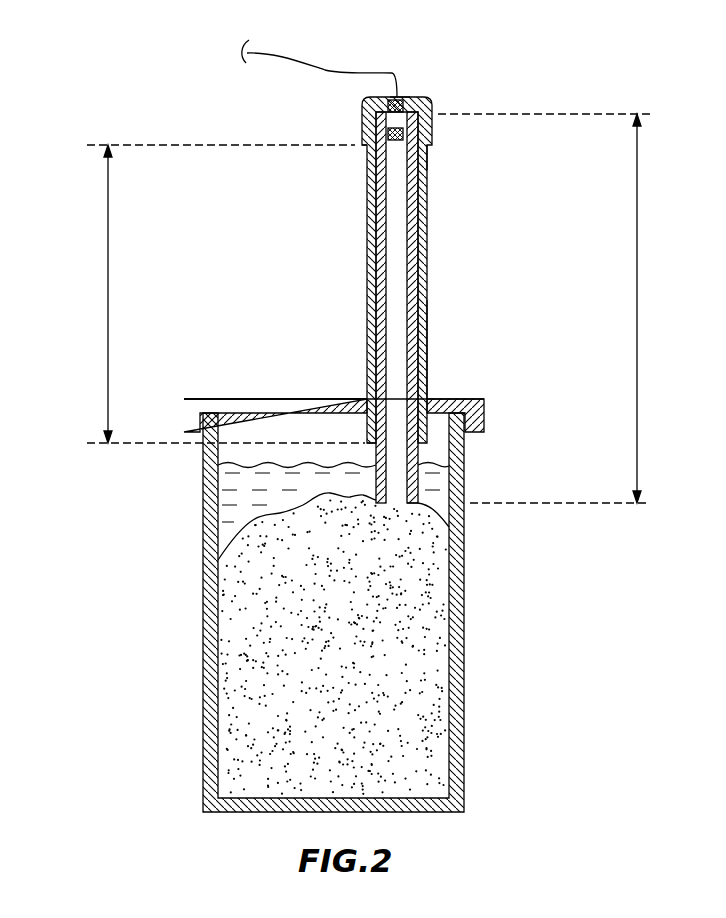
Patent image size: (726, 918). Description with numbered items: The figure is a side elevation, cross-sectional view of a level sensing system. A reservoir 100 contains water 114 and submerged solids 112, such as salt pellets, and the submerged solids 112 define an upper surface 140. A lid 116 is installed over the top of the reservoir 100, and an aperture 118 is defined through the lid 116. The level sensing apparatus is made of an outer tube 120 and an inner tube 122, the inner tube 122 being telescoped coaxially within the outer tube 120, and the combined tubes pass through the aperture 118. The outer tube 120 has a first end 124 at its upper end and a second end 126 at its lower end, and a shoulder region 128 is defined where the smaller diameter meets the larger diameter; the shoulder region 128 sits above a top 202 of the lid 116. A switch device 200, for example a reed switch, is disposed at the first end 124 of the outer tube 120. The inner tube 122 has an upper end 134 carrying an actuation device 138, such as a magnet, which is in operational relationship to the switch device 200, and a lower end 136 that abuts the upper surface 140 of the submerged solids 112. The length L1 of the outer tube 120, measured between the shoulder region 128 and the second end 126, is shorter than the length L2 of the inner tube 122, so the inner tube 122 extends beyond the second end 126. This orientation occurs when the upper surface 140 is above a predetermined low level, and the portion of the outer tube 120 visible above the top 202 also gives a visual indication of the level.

The reservoir 100 is at (464, 566).
The submerged solids 112 is at (351, 639).
The water 114 is at (235, 492).
The lid 116 is at (485, 407).
The aperture 118 is at (442, 383).
The outer tube 120 is at (427, 237).
The inner tube 122 is at (419, 172).
The first end 124 is at (341, 107).
The second end 126 is at (365, 425).
The shoulder region 128 is at (356, 155).
The upper end 134 is at (430, 156).
The lower end 136 is at (431, 485).
The actuation device 138 is at (400, 114).
The upper surface 140 is at (250, 519).
The switch device 200 is at (405, 97).
The top 202 is at (212, 399).
The length L1 is at (108, 215).
The length L2 is at (637, 215).